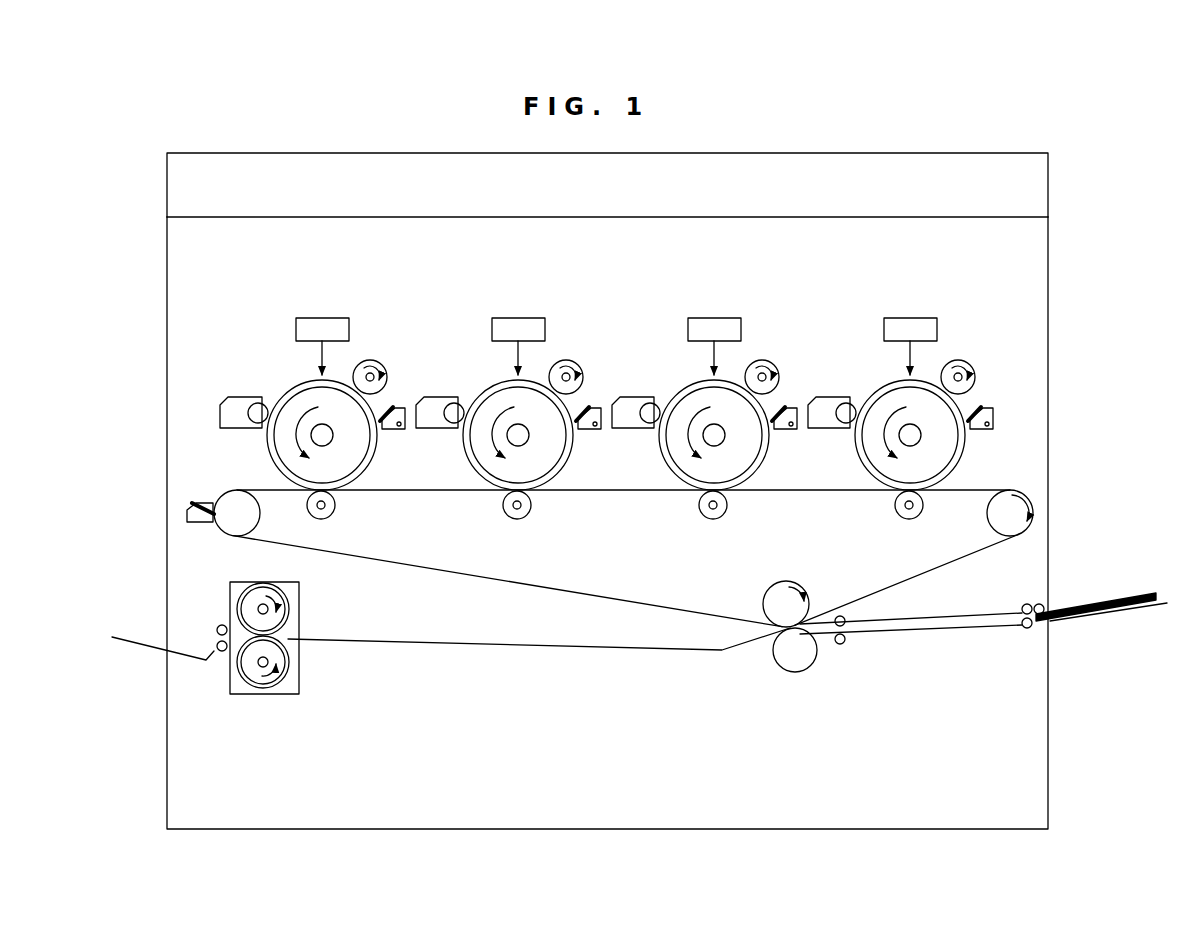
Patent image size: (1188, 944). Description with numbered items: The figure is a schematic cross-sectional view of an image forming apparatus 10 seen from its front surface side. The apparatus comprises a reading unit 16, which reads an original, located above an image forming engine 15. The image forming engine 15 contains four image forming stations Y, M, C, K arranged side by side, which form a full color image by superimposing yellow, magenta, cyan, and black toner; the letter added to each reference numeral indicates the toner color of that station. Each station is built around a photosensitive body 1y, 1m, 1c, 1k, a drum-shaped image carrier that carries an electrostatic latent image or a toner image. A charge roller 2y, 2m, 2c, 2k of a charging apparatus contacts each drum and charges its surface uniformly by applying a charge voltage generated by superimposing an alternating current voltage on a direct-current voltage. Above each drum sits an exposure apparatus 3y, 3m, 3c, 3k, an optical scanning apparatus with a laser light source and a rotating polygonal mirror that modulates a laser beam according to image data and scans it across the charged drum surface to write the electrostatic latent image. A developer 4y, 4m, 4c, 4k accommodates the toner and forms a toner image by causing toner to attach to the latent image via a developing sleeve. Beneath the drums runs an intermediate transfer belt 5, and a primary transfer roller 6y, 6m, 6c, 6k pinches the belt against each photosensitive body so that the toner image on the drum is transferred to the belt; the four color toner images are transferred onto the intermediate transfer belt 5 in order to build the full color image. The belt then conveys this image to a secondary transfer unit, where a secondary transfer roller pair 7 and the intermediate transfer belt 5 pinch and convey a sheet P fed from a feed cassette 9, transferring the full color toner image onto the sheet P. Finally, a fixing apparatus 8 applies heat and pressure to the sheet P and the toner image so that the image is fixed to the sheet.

The image forming apparatus 10 is at (1028, 130).
The reading unit 16 is at (1032, 190).
The image forming engine 15 is at (1046, 263).
The yellow image forming station Y is at (286, 284).
The magenta image forming station M is at (517, 385).
The cyan image forming station C is at (709, 385).
The black image forming station K is at (905, 385).
The photosensitive body 1y is at (268, 456).
The photosensitive body 1m is at (502, 435).
The photosensitive body 1c is at (700, 435).
The photosensitive body 1k is at (896, 435).
The charge roller 2y is at (383, 363).
The charge roller 2m is at (591, 356).
The charge roller 2c is at (781, 356).
The charge roller 2k is at (978, 356).
The exposure apparatus 3y is at (337, 327).
The exposure apparatus 3m is at (537, 326).
The exposure apparatus 3c is at (728, 326).
The exposure apparatus 3k is at (924, 326).
The developer 4y is at (229, 404).
The developer 4m is at (433, 389).
The developer 4c is at (630, 389).
The developer 4k is at (826, 389).
The primary transfer roller 6y is at (336, 508).
The primary transfer roller 6m is at (552, 513).
The primary transfer roller 6c is at (742, 513).
The primary transfer roller 6k is at (939, 513).
The intermediate transfer belt 5 is at (565, 590).
The secondary transfer roller pair 7 is at (782, 660).
The fixing apparatus 8 is at (300, 612).
The feed cassette 9 is at (1086, 618).
The sheet P is at (1068, 604).